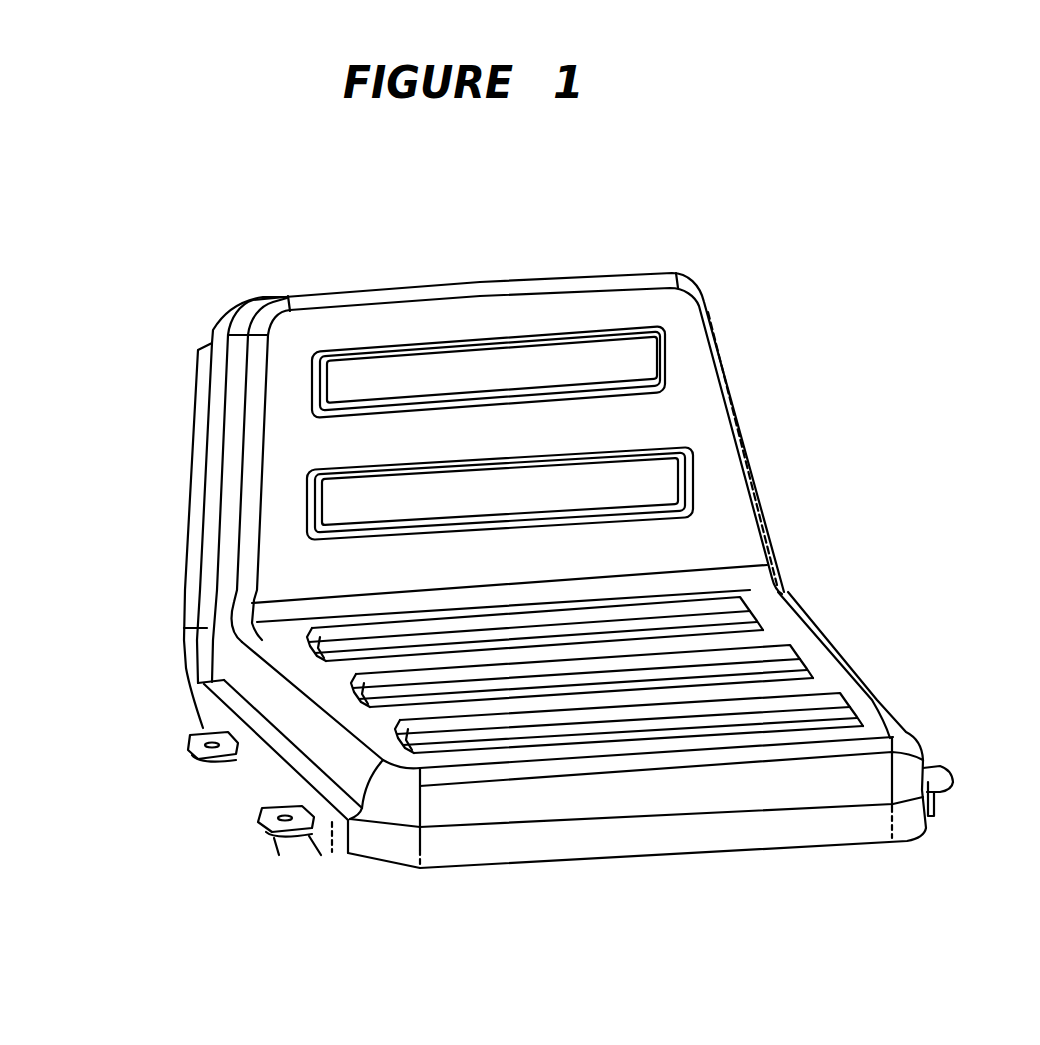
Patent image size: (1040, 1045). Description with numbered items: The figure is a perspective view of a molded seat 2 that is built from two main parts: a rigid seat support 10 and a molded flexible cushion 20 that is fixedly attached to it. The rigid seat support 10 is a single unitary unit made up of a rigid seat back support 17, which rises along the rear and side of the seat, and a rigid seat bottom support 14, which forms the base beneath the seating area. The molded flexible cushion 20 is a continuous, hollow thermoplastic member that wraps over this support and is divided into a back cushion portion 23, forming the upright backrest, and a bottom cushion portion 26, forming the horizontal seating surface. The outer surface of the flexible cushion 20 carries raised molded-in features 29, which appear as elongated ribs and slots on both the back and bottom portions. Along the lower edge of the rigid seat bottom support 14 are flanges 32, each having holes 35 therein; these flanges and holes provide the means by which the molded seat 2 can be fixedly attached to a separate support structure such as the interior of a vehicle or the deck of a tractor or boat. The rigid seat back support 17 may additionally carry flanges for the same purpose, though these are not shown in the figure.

The molded seat 2 is at (882, 315).
The rigid seat support 10 is at (186, 670).
The rigid seat bottom support 14 is at (527, 852).
The rigid seat back support 17 is at (195, 537).
The molded flexible cushion 20 is at (818, 625).
The back cushion portion 23 is at (713, 427).
The bottom cushion portion 26 is at (873, 707).
The raised molded-in features 29 is at (413, 367).
The flanges 32 is at (190, 757).
The holes 35 is at (270, 812).